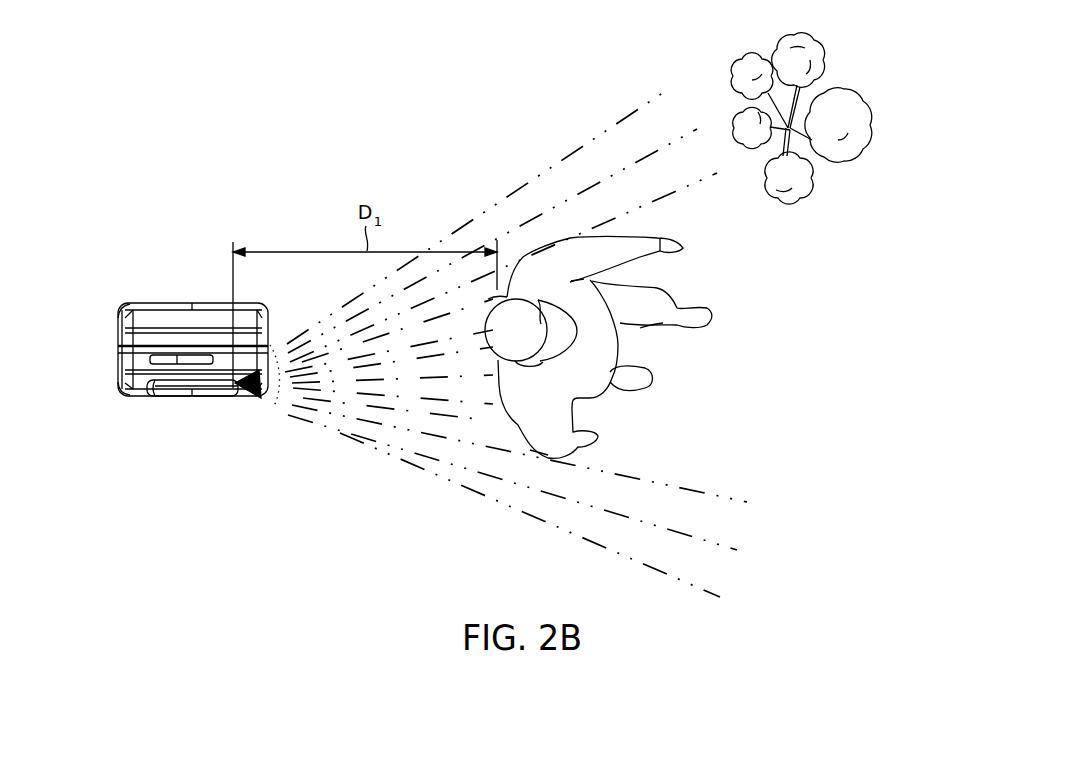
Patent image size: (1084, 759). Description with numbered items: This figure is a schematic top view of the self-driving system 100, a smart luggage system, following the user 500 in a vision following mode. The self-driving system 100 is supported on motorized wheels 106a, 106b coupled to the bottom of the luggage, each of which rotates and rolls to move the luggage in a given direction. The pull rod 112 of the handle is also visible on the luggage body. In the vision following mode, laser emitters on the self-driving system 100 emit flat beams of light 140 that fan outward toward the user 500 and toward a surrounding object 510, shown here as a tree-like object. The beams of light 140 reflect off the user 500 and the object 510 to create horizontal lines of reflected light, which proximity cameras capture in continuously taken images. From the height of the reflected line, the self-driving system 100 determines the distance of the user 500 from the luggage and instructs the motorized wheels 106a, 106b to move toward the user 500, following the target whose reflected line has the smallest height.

The self-driving system 100 is at (156, 243).
The motorized wheel 106a is at (117, 318).
The motorized wheel 106b is at (118, 386).
The pull rod 112 is at (205, 398).
The flat beams of light 140 is at (568, 197).
The user 500 is at (610, 347).
The object 510 is at (833, 155).